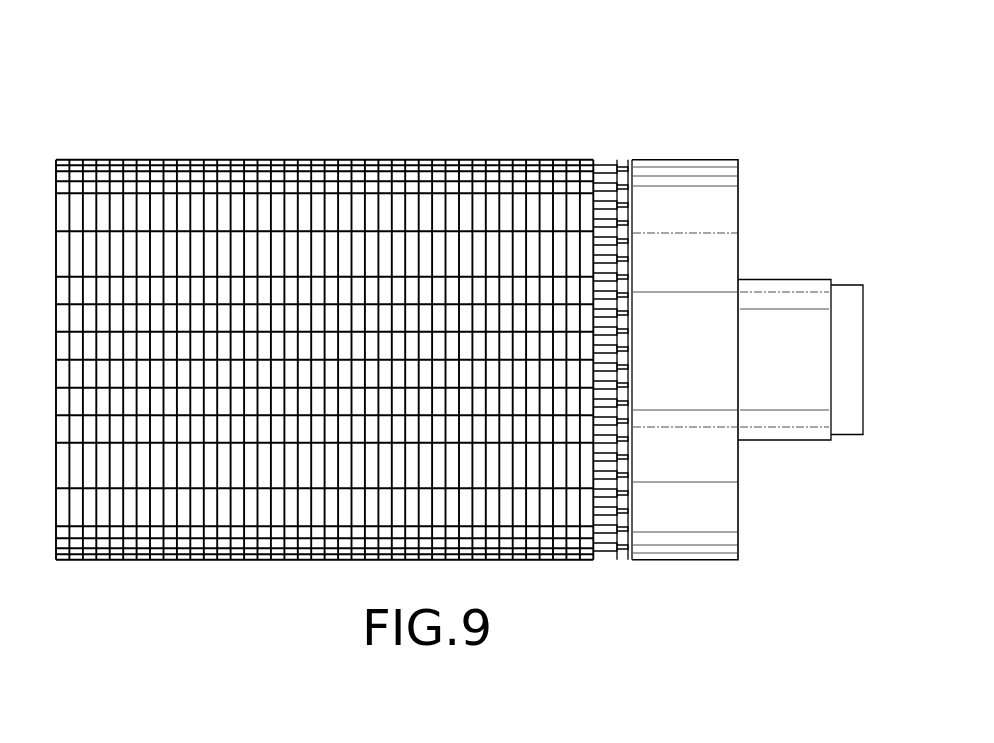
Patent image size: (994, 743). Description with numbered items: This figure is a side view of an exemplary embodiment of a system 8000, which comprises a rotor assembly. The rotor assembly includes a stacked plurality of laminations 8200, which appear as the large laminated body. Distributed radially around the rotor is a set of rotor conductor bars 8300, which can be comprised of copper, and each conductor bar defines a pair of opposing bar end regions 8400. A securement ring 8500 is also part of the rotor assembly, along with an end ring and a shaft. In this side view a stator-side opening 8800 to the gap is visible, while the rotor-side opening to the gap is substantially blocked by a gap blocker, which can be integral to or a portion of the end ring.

The system 8000 is at (125, 66).
The stacked plurality of laminations 8200 is at (442, 188).
The rotor conductor bars 8300 is at (613, 360).
The bar end regions 8400 is at (627, 228).
The securement ring 8500 is at (627, 195).
The stator-side opening 8800 is at (627, 258).